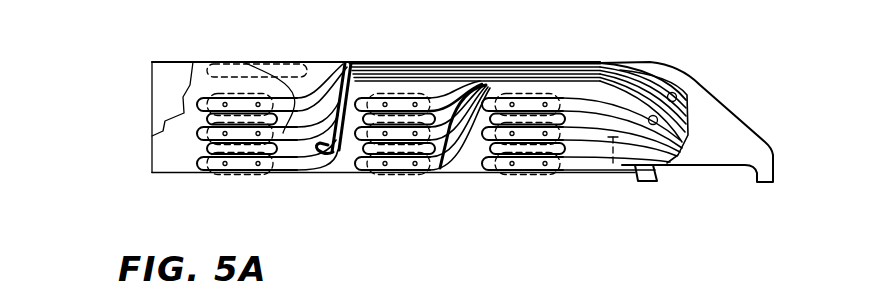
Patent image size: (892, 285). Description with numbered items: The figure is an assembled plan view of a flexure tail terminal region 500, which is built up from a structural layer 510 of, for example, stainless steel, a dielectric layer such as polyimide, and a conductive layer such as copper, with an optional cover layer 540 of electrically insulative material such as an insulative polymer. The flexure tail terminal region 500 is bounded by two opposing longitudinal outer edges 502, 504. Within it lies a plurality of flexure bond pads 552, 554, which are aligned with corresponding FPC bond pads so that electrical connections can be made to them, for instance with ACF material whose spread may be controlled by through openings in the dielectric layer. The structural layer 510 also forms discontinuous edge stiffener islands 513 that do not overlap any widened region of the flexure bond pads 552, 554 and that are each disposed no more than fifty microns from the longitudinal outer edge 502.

The flexure tail terminal region 500 is at (115, 57).
The longitudinal outer edge 502 is at (372, 62).
The longitudinal outer edge 504 is at (347, 175).
The structural layer 510 is at (730, 137).
The discontinuous edge stiffener island 513 is at (294, 72).
The cover layer 540 is at (167, 80).
The flexure bond pad 552 is at (243, 163).
The flexure bond pad 554 is at (233, 103).